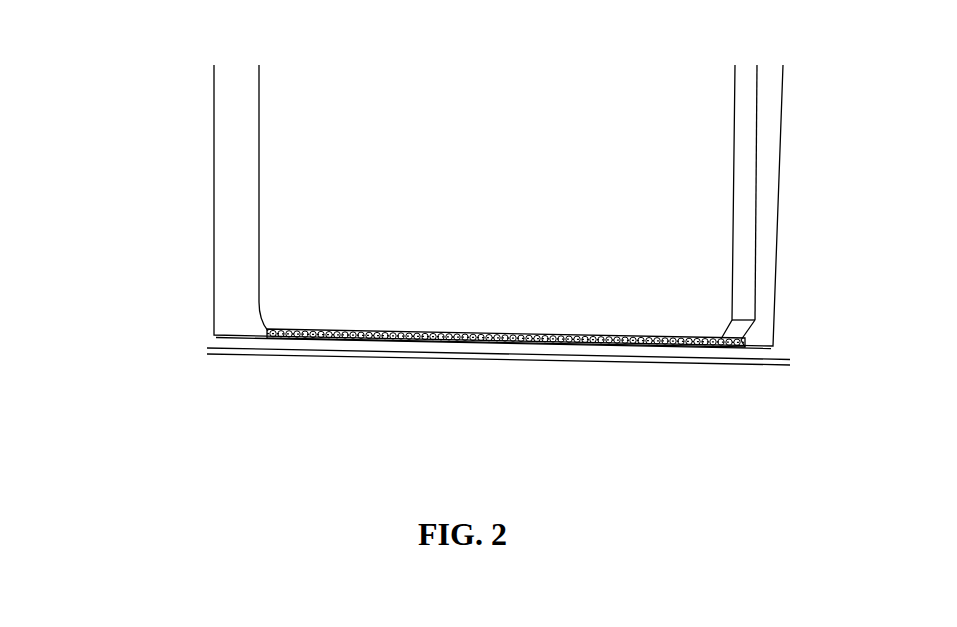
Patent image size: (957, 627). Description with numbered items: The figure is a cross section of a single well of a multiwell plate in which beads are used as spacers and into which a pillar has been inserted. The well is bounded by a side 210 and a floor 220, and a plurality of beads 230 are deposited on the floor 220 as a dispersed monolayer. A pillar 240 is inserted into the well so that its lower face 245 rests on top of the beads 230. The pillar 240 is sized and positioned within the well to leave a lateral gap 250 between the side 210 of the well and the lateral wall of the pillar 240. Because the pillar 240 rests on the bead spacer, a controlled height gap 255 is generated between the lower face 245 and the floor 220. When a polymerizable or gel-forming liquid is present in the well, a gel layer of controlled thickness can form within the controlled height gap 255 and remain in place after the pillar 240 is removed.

The side 210 is at (213, 288).
The floor 220 is at (235, 347).
The beads 230 is at (270, 333).
The pillar 240 is at (257, 144).
The lower face 245 is at (680, 336).
The lateral gap 250 is at (235, 218).
The controlled height gap 255 is at (743, 340).